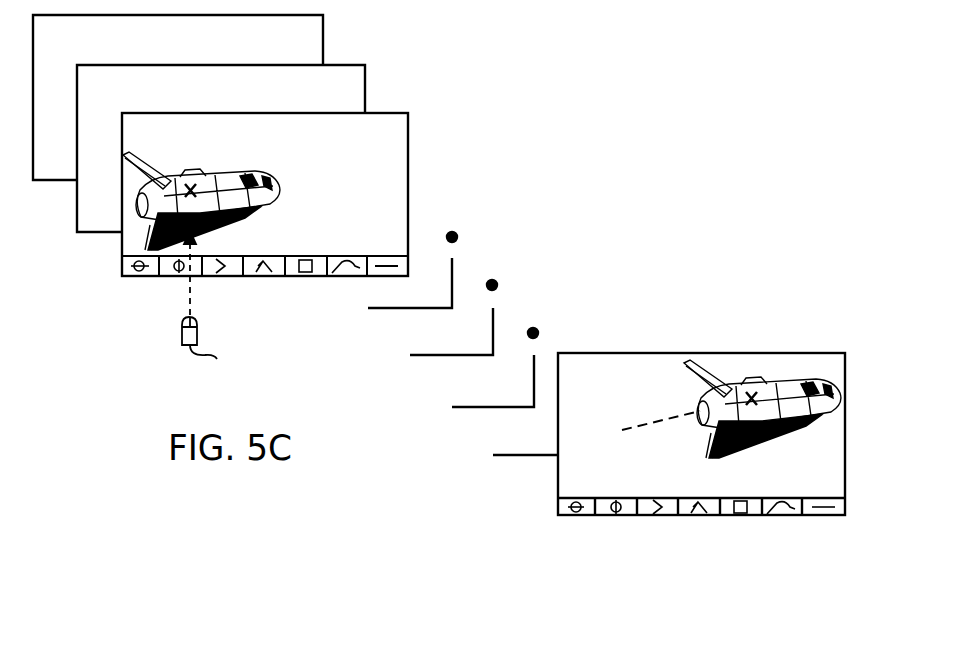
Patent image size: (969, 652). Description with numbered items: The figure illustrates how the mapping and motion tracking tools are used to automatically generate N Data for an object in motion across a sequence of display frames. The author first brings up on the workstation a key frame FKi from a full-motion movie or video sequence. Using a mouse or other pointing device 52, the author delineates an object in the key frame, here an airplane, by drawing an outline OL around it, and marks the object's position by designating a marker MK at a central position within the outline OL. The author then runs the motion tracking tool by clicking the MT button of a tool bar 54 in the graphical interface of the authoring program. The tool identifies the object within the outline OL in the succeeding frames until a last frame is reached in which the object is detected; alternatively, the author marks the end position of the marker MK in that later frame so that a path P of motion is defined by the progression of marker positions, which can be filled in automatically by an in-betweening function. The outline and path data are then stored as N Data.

The key frame FKi is at (400, 113).
The outline OL is at (278, 186).
The marker MK is at (200, 192).
The tool bar 54 is at (368, 256).
The MT button MT is at (385, 268).
The pointing device 52 is at (218, 316).
The path P is at (654, 428).